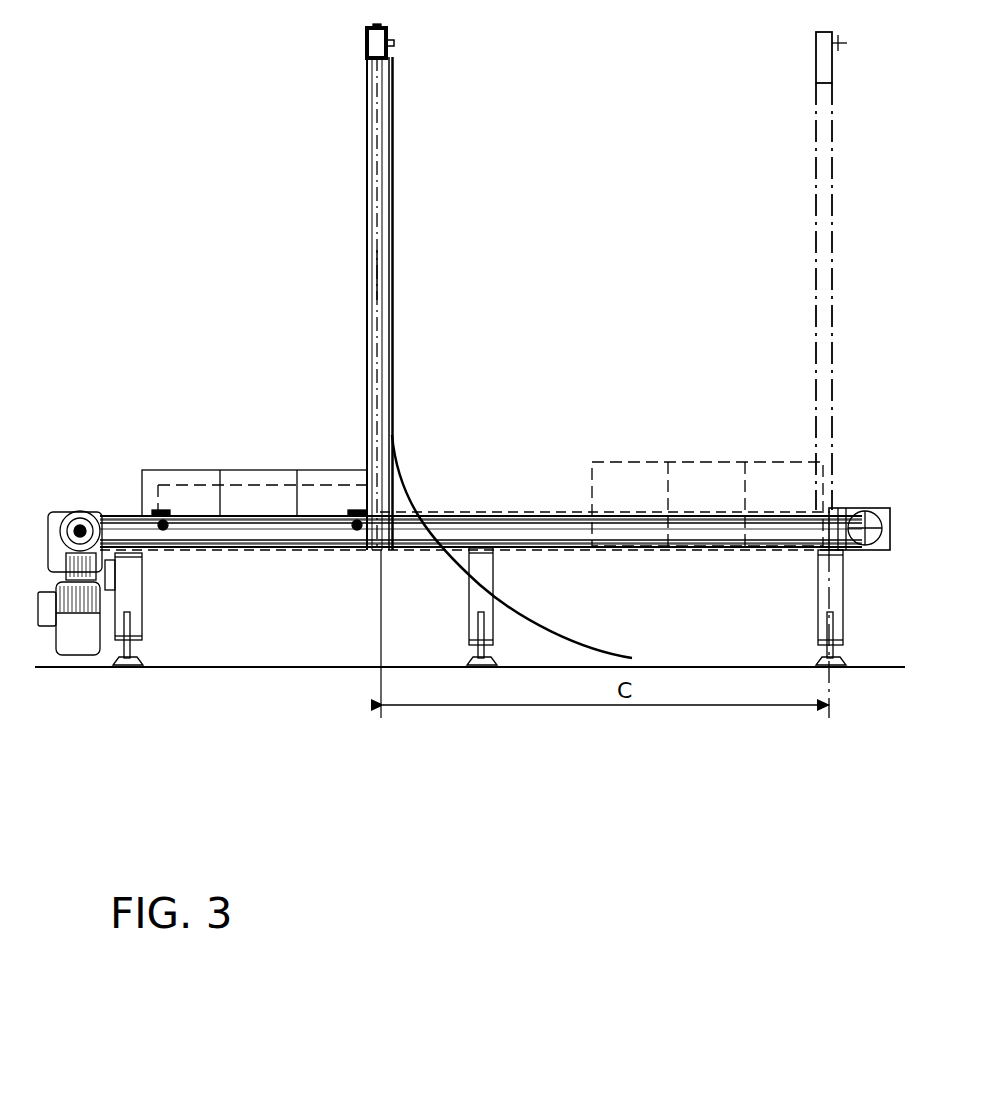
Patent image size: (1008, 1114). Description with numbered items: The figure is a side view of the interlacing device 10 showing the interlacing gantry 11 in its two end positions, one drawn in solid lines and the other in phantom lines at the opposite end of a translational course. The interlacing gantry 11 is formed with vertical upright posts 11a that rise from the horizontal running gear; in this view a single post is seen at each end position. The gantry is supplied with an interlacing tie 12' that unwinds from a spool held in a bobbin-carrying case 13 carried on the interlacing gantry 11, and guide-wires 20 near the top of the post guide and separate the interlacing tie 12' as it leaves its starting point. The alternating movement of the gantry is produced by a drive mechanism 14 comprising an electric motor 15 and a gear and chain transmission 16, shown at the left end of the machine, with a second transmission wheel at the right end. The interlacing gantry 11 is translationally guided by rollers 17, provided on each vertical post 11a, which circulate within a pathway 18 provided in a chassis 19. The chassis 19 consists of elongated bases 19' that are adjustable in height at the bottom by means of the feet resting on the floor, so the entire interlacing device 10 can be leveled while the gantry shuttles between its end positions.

The interlacing device 10 is at (481, 301).
The interlacing gantry 11 is at (378, 185).
The vertical upright post 11a is at (379, 255).
The interlacing tie 12' is at (512, 434).
The bobbin-carrying case 13 is at (180, 477).
The drive mechanism 14 is at (47, 652).
The electric motor 15 is at (82, 640).
The gear and chain transmission 16 is at (86, 508).
The rollers 17 is at (192, 522).
The pathway 18 is at (440, 512).
The chassis 19 is at (479, 596).
The elongated base 19' is at (506, 668).
The guide-wire 20 is at (394, 42).